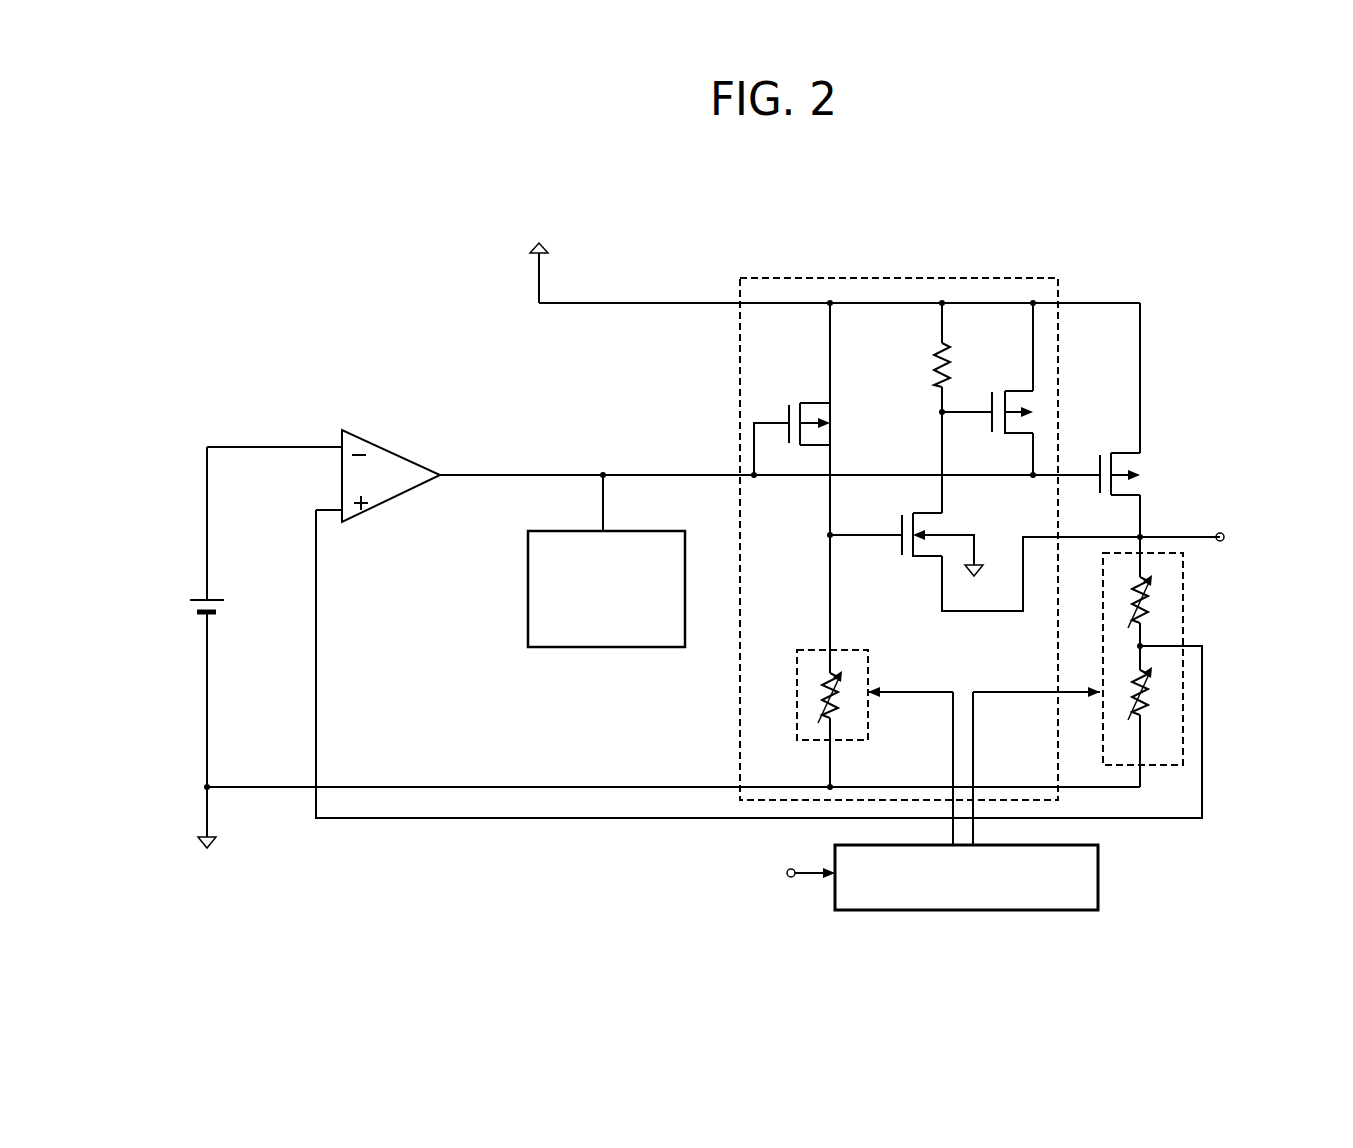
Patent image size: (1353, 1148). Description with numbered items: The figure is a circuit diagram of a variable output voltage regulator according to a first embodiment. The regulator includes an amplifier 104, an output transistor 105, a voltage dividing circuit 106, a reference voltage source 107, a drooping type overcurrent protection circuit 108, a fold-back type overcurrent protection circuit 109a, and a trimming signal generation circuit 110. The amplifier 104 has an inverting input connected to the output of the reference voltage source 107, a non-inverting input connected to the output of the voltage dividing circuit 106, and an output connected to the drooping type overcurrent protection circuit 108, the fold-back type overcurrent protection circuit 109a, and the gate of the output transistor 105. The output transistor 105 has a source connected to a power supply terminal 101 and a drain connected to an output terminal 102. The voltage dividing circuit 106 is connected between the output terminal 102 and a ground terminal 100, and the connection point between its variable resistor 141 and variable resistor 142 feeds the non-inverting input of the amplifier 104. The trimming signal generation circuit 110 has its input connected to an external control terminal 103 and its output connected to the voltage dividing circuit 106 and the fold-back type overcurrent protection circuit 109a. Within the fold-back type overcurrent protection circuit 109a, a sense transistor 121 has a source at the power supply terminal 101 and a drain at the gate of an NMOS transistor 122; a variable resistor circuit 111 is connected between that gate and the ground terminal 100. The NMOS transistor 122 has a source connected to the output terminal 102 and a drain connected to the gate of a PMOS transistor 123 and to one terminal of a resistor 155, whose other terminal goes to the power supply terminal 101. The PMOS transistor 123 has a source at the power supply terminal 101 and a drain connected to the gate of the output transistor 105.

The ground terminal 100 is at (224, 837).
The power supply terminal 101 is at (571, 268).
The output terminal 102 is at (1235, 520).
The external control terminal 103 is at (779, 879).
The amplifier 104 is at (412, 452).
The output transistor 105 is at (1168, 449).
The voltage dividing circuit 106 is at (1181, 670).
The reference voltage source 107 is at (170, 617).
The drooping type overcurrent protection circuit 108 is at (566, 589).
The fold-back type overcurrent protection circuit 109a is at (850, 539).
The trimming signal generation circuit 110 is at (1016, 874).
The variable resistor circuit 111 is at (882, 688).
The sense transistor 121 is at (792, 404).
The NMOS transistor 122 is at (906, 572).
The PMOS transistor 123 is at (1030, 385).
The variable resistor 141 is at (1190, 591).
The variable resistor 142 is at (1191, 666).
The resistor 155 is at (906, 395).